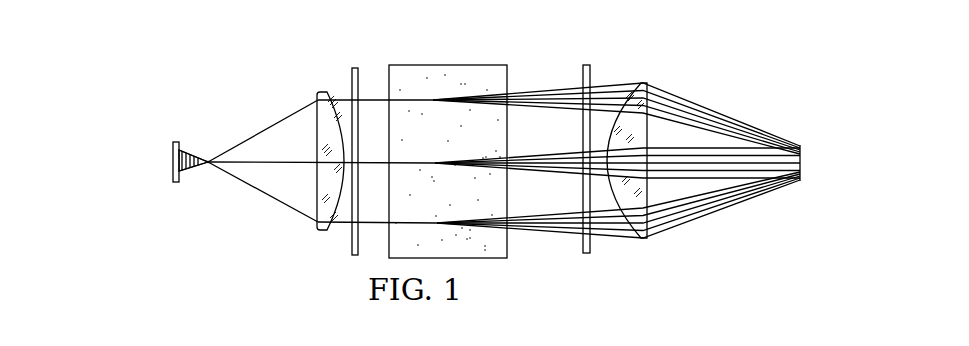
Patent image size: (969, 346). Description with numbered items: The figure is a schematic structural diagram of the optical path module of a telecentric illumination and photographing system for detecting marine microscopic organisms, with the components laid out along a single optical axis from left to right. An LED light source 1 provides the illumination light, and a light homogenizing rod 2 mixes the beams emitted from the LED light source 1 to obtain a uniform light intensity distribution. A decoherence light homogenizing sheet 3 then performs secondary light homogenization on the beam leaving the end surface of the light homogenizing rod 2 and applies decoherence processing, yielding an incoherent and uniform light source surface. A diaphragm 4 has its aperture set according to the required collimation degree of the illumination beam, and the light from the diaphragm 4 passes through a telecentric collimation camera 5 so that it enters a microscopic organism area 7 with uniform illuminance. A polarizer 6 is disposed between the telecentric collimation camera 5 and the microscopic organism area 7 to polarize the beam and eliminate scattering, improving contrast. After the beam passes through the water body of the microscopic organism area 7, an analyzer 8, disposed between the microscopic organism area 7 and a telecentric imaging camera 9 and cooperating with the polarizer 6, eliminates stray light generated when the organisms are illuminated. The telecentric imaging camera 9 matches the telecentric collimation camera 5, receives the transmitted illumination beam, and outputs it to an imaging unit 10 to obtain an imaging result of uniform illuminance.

The LED light source 1 is at (135, 153).
The light homogenizing rod 2 is at (147, 135).
The decoherence light homogenizing sheet 3 is at (130, 127).
The diaphragm 4 is at (322, 145).
The telecentric collimation camera 5 is at (300, 149).
The polarizer 6 is at (373, 146).
The microscopic organism area 7 is at (594, 146).
The analyzer 8 is at (606, 148).
The telecentric imaging camera 9 is at (667, 136).
The imaging unit 10 is at (829, 143).